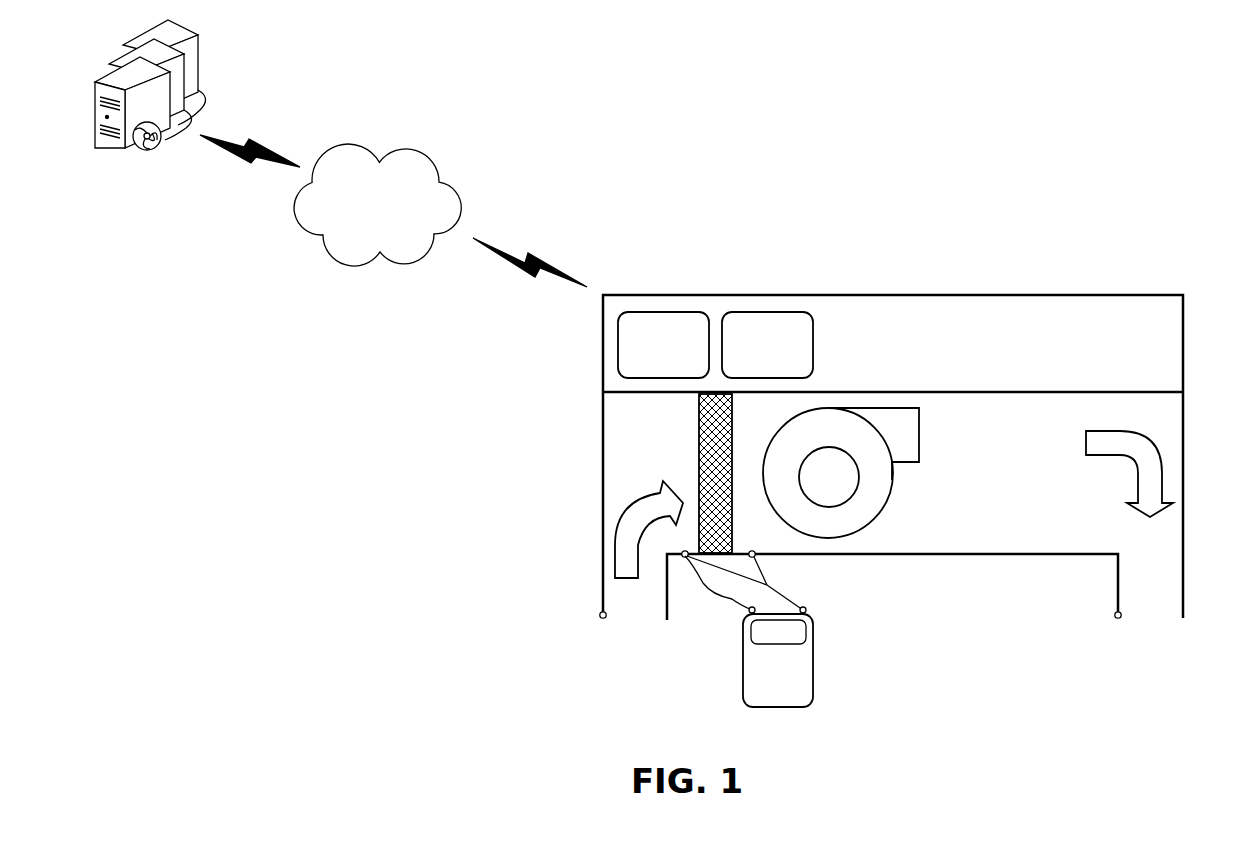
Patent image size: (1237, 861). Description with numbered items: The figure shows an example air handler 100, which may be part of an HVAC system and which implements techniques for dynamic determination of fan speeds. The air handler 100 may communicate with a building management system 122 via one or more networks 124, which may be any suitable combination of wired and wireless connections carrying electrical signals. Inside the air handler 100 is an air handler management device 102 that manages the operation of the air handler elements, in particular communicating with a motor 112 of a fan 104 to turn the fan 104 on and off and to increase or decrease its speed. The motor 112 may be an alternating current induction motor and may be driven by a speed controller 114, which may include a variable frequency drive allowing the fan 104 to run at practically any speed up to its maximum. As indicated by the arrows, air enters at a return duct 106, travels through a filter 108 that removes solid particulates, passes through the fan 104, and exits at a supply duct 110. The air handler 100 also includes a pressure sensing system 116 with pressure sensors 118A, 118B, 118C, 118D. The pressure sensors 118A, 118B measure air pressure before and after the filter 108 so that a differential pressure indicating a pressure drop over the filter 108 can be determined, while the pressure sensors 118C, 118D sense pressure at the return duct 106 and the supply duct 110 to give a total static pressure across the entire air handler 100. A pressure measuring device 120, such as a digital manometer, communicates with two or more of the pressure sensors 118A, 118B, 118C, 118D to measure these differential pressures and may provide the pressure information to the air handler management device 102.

The air handler 100 is at (1128, 68).
The air handler management device 102 is at (663, 345).
The fan 104 is at (918, 432).
The return duct 106 is at (628, 627).
The filter 108 is at (700, 425).
The supply duct 110 is at (1145, 630).
The motor 112 is at (858, 478).
The speed controller 114 is at (767, 345).
The pressure sensing system 116 is at (710, 660).
The pressure sensor 118A is at (770, 585).
The pressure sensor 118B is at (755, 556).
The pressure sensor 118C is at (600, 612).
The pressure sensor 118D is at (1115, 612).
The pressure measuring device 120 is at (813, 672).
The building management system 122 is at (144, 112).
The networks 124 is at (377, 205).